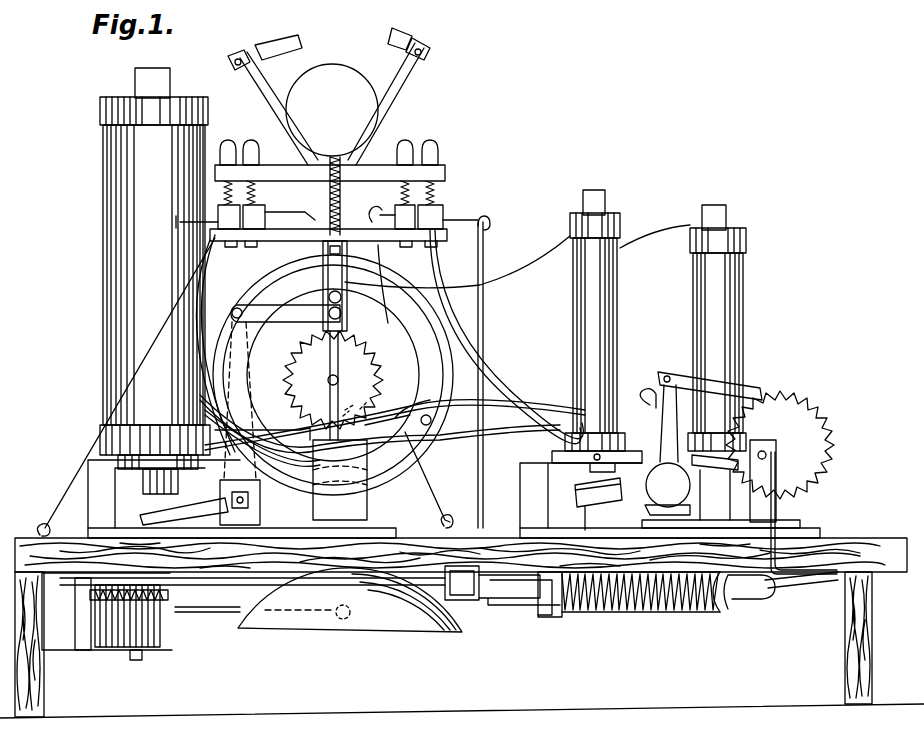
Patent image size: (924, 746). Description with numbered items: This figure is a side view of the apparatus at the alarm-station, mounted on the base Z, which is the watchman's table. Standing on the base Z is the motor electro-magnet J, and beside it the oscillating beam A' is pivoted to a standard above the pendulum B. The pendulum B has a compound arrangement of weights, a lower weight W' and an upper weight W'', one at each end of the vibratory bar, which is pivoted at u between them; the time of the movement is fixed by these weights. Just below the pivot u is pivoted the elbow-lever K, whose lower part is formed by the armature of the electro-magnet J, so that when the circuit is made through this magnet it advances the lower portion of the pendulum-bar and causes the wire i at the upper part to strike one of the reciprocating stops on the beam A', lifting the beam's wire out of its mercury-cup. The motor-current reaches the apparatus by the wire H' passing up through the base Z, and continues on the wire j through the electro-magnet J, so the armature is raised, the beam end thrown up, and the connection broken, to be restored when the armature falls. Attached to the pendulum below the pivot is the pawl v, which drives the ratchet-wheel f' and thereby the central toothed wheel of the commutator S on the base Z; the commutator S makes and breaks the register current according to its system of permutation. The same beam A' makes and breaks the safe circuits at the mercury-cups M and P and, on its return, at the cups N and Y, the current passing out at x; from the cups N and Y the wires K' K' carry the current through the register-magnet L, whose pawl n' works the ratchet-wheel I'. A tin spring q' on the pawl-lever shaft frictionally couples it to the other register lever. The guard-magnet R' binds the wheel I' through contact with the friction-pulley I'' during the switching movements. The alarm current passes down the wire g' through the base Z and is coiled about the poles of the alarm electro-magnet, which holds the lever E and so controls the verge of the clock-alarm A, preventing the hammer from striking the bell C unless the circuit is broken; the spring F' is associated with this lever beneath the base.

The base Z is at (462, 628).
The electro-magnet J is at (155, 281).
The oscillating beam A' is at (328, 193).
The mercury-cup Y is at (208, 217).
The mercury-cup N is at (279, 217).
The mercury-cup P is at (392, 217).
The mercury-cup M is at (430, 217).
The terminal x is at (466, 227).
The weight W'' is at (332, 110).
The wire i is at (389, 96).
The pendulum B is at (335, 244).
The pivot u is at (335, 297).
The pawl v is at (286, 319).
The elbow-lever K is at (240, 423).
The commutator S is at (333, 375).
The ratchet-wheel f' is at (333, 380).
The wire j is at (384, 293).
The weight W' is at (340, 480).
The wire H' is at (489, 375).
The wires K' is at (395, 340).
The register electro-magnet L is at (581, 359).
The guard-magnet R' is at (717, 328).
The pawl n' is at (710, 386).
The tin spring q' is at (646, 405).
The friction-pulley I'' is at (667, 450).
The ratchet-wheel I' is at (778, 445).
The wire g' is at (793, 507).
The lever E is at (462, 583).
The spring F' is at (700, 592).
The bell C is at (350, 600).
The clock-alarm A is at (107, 616).